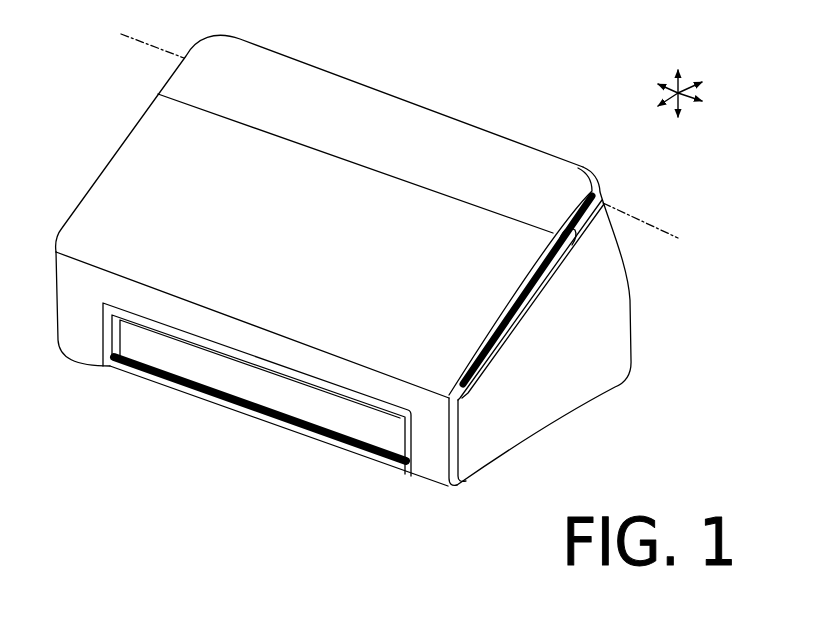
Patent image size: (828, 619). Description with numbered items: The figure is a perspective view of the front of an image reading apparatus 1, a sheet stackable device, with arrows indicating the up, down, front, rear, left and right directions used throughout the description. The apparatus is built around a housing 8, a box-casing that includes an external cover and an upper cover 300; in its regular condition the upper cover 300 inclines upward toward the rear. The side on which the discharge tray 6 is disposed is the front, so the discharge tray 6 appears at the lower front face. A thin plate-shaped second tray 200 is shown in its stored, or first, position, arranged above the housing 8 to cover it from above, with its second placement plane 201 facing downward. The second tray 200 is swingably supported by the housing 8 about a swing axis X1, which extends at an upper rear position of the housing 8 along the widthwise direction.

The image reading apparatus 1 is at (414, 256).
The second tray 200 is at (132, 166).
The second placement plane 201 is at (541, 287).
The upper cover 300 is at (512, 336).
The discharge tray 6 is at (261, 425).
The housing 8 is at (633, 292).
The swing axis X1 is at (654, 228).